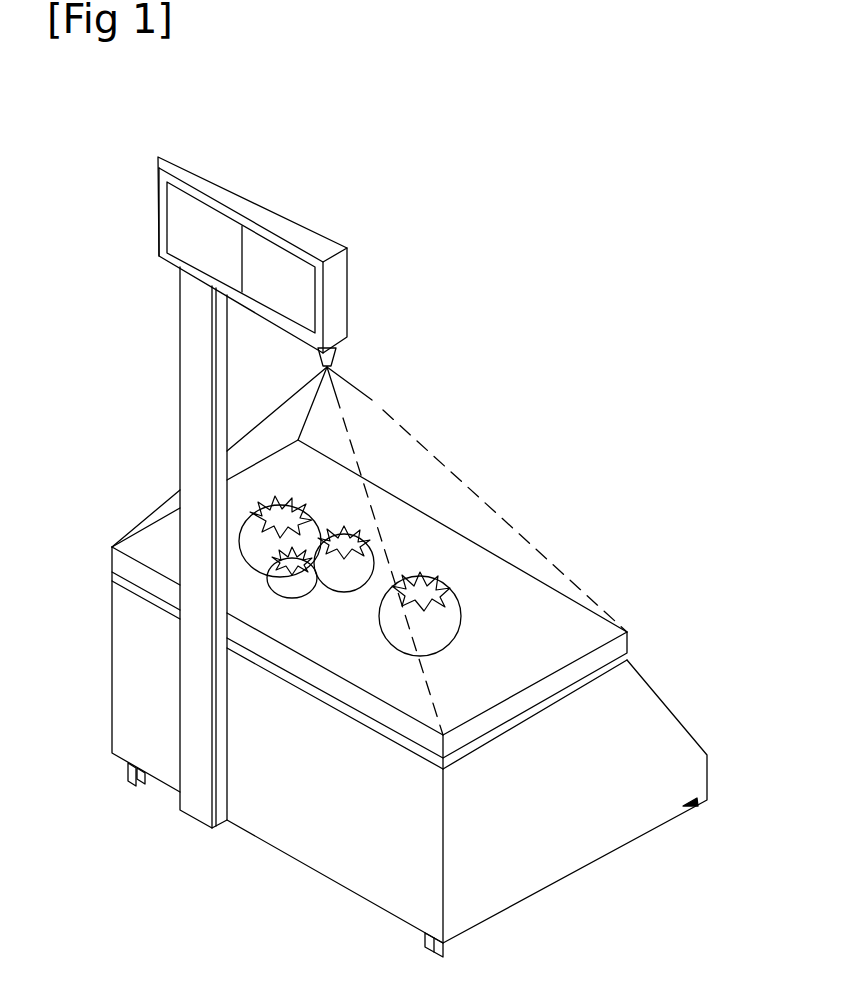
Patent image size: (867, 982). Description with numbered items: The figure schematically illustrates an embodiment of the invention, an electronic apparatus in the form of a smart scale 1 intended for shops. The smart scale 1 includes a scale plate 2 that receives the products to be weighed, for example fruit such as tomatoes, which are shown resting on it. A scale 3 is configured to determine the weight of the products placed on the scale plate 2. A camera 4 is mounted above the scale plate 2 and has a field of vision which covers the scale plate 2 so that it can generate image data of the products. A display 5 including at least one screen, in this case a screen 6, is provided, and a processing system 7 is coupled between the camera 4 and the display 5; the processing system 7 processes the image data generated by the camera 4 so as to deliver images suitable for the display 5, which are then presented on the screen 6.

The smart scale 1 is at (630, 338).
The scale plate 2 is at (612, 648).
The scale 3 is at (687, 777).
The camera 4 is at (338, 360).
The display 5 is at (186, 172).
The screen 6 is at (173, 239).
The processing system 7 is at (262, 262).